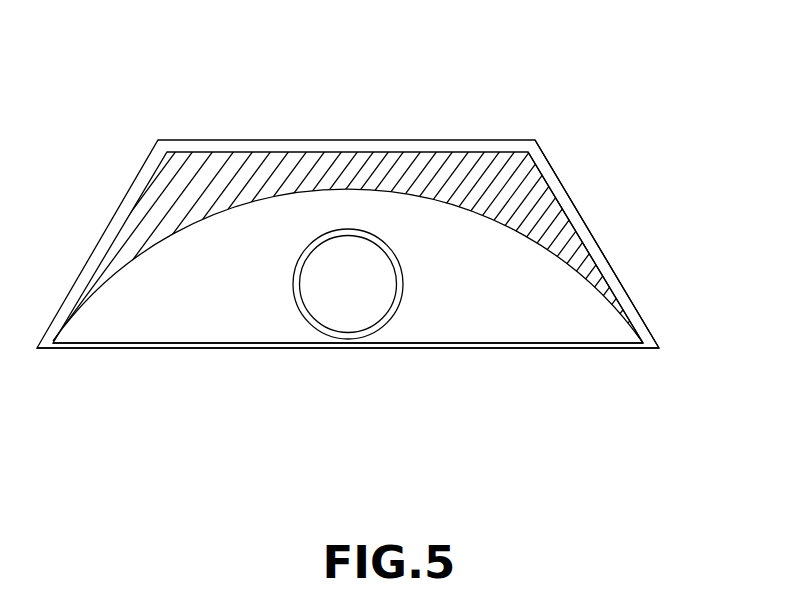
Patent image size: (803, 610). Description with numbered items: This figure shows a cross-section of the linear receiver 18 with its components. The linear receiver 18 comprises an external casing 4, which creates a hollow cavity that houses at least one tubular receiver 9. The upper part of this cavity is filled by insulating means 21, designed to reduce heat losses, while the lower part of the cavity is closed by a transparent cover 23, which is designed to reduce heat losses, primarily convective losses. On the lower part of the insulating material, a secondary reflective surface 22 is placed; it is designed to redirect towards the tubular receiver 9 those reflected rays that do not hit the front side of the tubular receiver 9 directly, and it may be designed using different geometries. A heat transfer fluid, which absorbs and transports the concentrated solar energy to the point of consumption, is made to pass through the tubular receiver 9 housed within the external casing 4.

The linear receiver 18 is at (548, 127).
The external casing 4 is at (598, 244).
The transparent cover 23 is at (203, 348).
The secondary reflective surface 22 is at (183, 229).
The insulating means 21 is at (260, 182).
The tubular receiver 9 is at (402, 283).